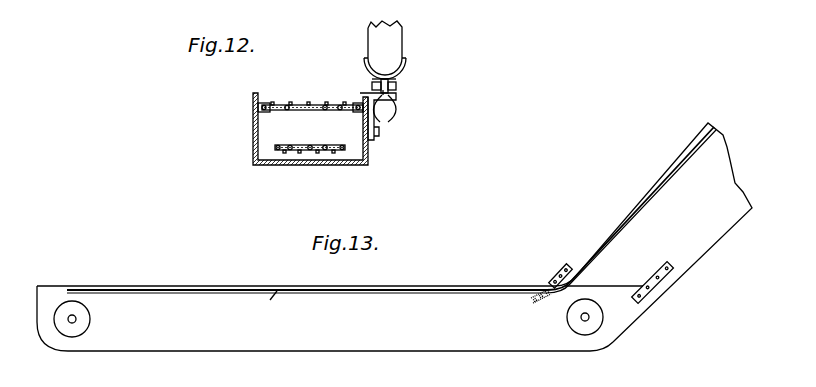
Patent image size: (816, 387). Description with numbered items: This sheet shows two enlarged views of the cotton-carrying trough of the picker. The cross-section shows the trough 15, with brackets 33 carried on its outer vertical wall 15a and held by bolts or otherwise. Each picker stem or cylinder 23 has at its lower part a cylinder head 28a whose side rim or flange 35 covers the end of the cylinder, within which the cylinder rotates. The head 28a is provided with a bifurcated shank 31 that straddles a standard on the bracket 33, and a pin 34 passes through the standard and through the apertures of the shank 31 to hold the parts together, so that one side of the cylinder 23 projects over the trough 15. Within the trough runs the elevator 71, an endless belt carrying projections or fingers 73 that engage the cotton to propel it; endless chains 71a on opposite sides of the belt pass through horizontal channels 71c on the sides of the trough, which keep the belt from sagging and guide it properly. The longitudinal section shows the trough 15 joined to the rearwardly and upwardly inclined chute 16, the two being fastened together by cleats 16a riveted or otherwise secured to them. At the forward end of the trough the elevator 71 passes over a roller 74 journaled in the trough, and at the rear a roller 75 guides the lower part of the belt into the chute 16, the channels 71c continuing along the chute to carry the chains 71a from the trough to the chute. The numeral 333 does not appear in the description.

In FIG. 12, the trough 15 is at (258, 163).
In FIG. 13, the trough 15 is at (340, 313).
In FIG. 12, the outer vertical wall 15a is at (379, 164).
In FIG. 13, the chute 16 is at (688, 268).
In FIG. 13, the cleats 16a is at (558, 278).
In FIG. 12, the cylinder 23 is at (397, 47).
In FIG. 12, the cylinder head 28a is at (402, 82).
In FIG. 12, the shank 31 is at (397, 89).
In FIG. 12, the bracket 33 is at (381, 116).
In FIG. 12, the pin 34 is at (397, 88).
In FIG. 12, the side rim or flange 35 is at (402, 72).
In FIG. 12, the spring arms 333 is at (392, 105).
In FIG. 12, the elevator 71 is at (312, 127).
In FIG. 12, the endless chain 71a is at (273, 104).
In FIG. 13, the endless chain 71a is at (205, 288).
In FIG. 12, the channel 71c is at (263, 103).
In FIG. 13, the channel 71c is at (656, 215).
In FIG. 12, the fingers 73 is at (324, 104).
In FIG. 13, the roller 74 is at (91, 322).
In FIG. 13, the roller 75 is at (567, 322).